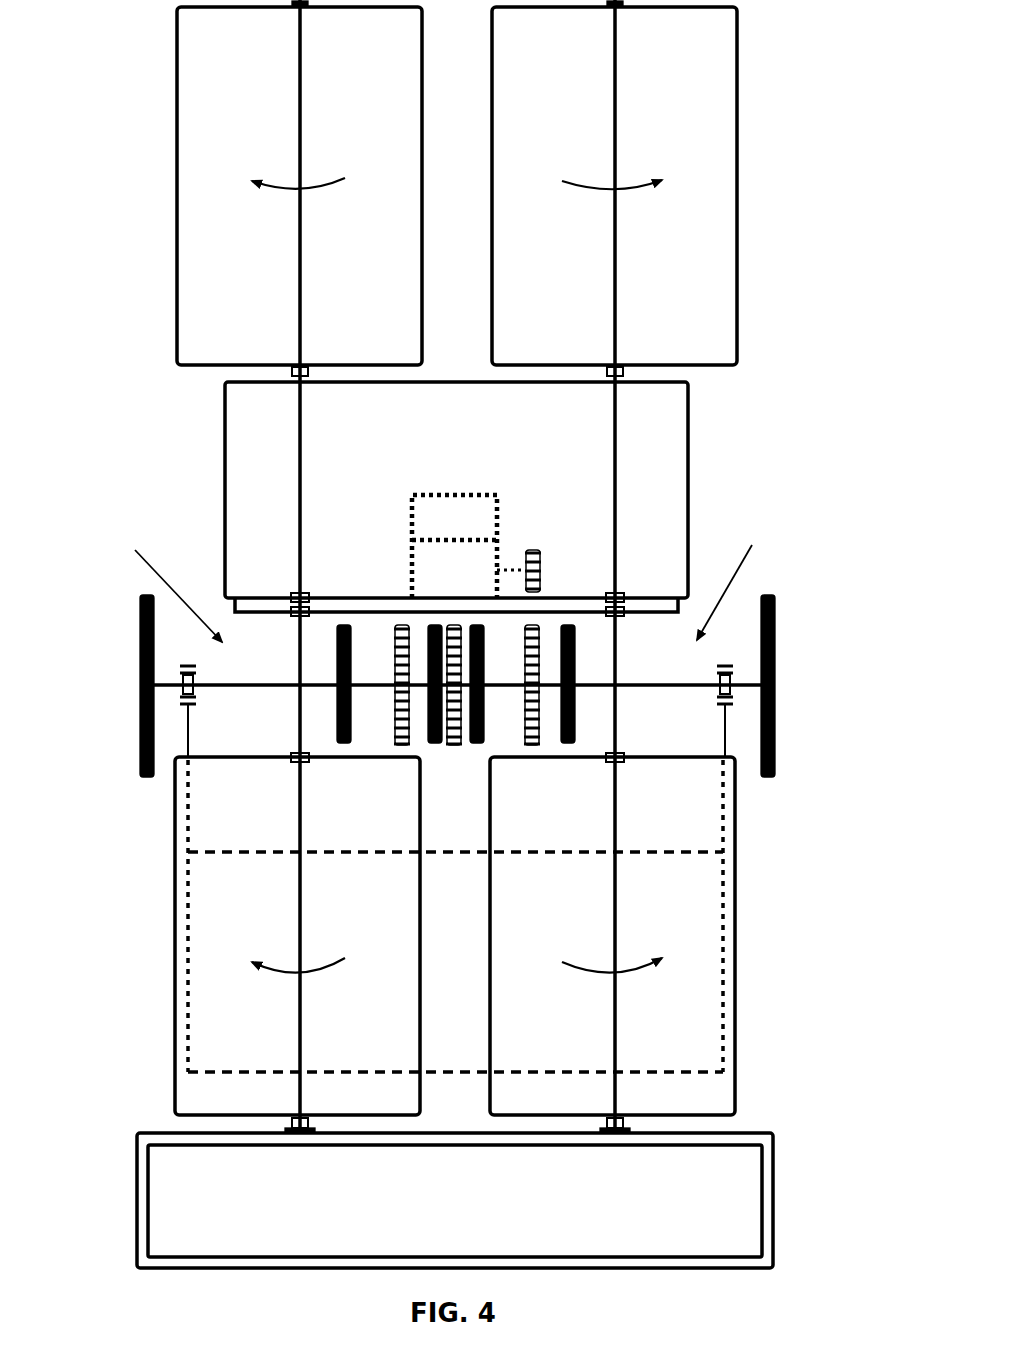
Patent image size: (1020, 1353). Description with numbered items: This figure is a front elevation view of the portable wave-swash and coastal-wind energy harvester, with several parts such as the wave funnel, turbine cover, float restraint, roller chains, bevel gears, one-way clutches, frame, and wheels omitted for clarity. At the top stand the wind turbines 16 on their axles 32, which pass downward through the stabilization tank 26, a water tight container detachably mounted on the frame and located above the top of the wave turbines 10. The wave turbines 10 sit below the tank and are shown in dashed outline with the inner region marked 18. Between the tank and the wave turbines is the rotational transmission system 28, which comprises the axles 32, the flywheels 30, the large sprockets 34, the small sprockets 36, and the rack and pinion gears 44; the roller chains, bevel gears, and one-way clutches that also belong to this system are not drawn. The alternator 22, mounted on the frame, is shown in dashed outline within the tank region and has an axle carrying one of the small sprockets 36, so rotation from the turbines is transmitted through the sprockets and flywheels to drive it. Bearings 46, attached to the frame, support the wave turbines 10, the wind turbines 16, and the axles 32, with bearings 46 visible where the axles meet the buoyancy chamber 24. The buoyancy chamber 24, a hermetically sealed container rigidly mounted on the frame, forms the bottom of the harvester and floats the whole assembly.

The wave turbines 10 is at (174, 955).
The wind turbines 16 is at (176, 210).
The inner liquid vessel 18 is at (665, 1068).
The alternator 22 is at (456, 493).
The buoyancy chamber 24 is at (776, 1195).
The stabilization tank 26 is at (224, 518).
The rotational transmission system 28 is at (439, 579).
The flywheels 30 is at (142, 658).
The axles 32 is at (517, 568).
The large sprockets 34 is at (400, 625).
The small sprockets 36 is at (537, 548).
The rack and pinion gears 44 is at (190, 698).
The bearings 46 is at (310, 1131).